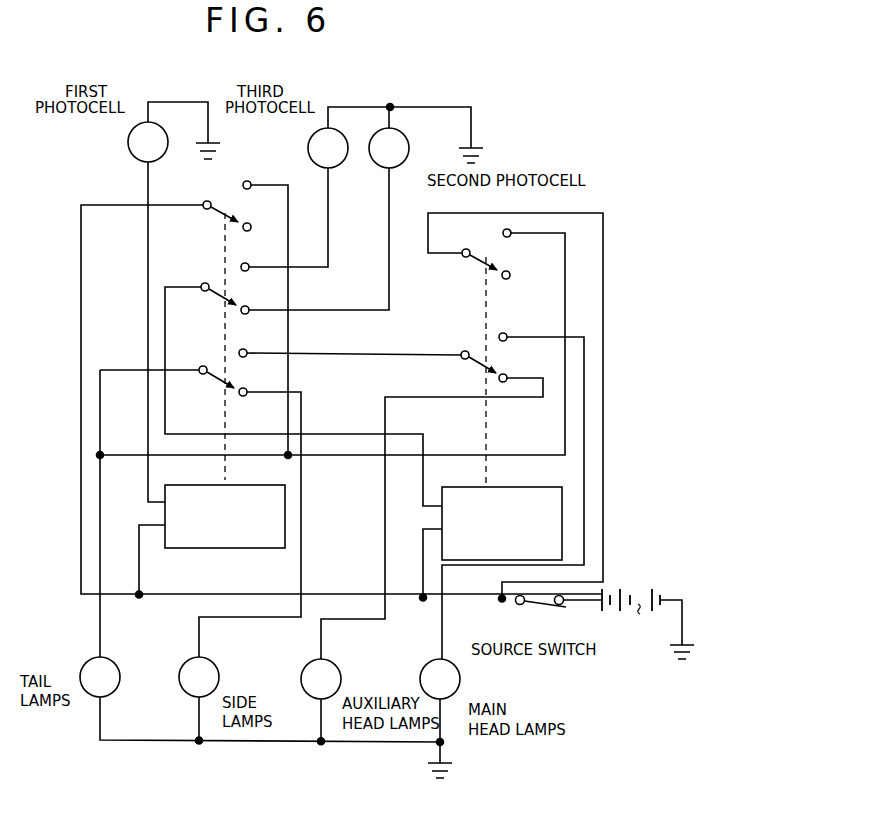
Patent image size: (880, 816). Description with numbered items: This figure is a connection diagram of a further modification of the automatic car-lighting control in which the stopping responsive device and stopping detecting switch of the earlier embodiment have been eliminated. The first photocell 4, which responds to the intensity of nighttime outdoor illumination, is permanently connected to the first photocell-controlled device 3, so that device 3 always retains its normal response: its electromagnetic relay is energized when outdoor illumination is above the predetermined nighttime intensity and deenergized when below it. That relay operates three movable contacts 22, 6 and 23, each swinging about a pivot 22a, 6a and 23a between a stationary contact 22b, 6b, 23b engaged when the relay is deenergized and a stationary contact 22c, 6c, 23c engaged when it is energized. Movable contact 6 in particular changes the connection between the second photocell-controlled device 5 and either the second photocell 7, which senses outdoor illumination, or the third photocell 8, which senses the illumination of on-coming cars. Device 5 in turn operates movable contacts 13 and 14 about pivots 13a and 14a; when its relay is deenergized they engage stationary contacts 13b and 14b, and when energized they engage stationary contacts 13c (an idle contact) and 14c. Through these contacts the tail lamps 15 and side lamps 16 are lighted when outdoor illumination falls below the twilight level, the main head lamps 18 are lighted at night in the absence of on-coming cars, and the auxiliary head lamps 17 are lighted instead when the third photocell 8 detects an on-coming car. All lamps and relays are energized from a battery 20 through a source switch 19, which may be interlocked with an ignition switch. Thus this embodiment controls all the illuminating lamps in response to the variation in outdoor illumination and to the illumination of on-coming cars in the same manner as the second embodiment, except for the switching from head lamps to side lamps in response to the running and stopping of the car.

The first photocell-controlled device 3 is at (274, 485).
The first photocell 4 is at (129, 139).
The second photocell-controlled device 5 is at (549, 487).
The movable contact 6 is at (303, 375).
The pivot of movable contact 6a is at (303, 383).
The stationary contact 6b is at (254, 258).
The stationary contact 6c is at (254, 299).
The second photocell 7 is at (400, 165).
The third photocell 8 is at (311, 138).
The movable contact 13 is at (515, 405).
The pivot of movable contact 13a is at (515, 405).
The stationary contact 13b is at (522, 243).
The stationary contact 13c is at (510, 275).
The movable contact 14 is at (452, 483).
The pivot of movable contact 14a is at (469, 343).
The stationary contact 14b is at (513, 483).
The stationary contact 14c is at (474, 377).
The tail lamps 15 is at (80, 668).
The side lamps 16 is at (219, 680).
The auxiliary head lamps 17 is at (341, 680).
The main head lamps 18 is at (460, 680).
The source switch 19 is at (531, 607).
The battery 20 is at (648, 624).
The movable contact 22 is at (236, 321).
The pivot of movable contact 22a is at (201, 193).
The stationary contact 22b is at (265, 308).
The stationary contact 22c is at (264, 228).
The movable contact 23 is at (280, 492).
The pivot of movable contact 23a is at (165, 360).
The stationary contact 23b is at (350, 342).
The stationary contact 23c is at (217, 390).